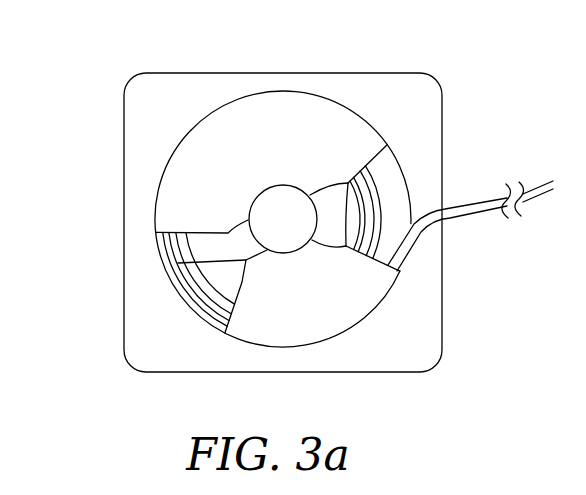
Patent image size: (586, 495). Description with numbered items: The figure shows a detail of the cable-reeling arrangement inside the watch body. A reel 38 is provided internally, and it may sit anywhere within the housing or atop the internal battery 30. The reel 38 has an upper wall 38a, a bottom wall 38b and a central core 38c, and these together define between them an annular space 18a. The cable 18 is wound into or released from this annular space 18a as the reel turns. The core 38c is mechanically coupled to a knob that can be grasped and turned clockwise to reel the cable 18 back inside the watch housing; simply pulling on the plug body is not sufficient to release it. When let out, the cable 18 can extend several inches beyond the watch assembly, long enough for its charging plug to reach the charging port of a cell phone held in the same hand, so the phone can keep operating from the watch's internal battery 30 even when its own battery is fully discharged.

The internal battery 30 is at (148, 118).
The reel 38 is at (225, 212).
The upper wall 38a is at (254, 113).
The bottom wall 38b is at (233, 257).
The core 38c is at (282, 232).
The cable 18 is at (290, 277).
The annular space 18a is at (230, 235).